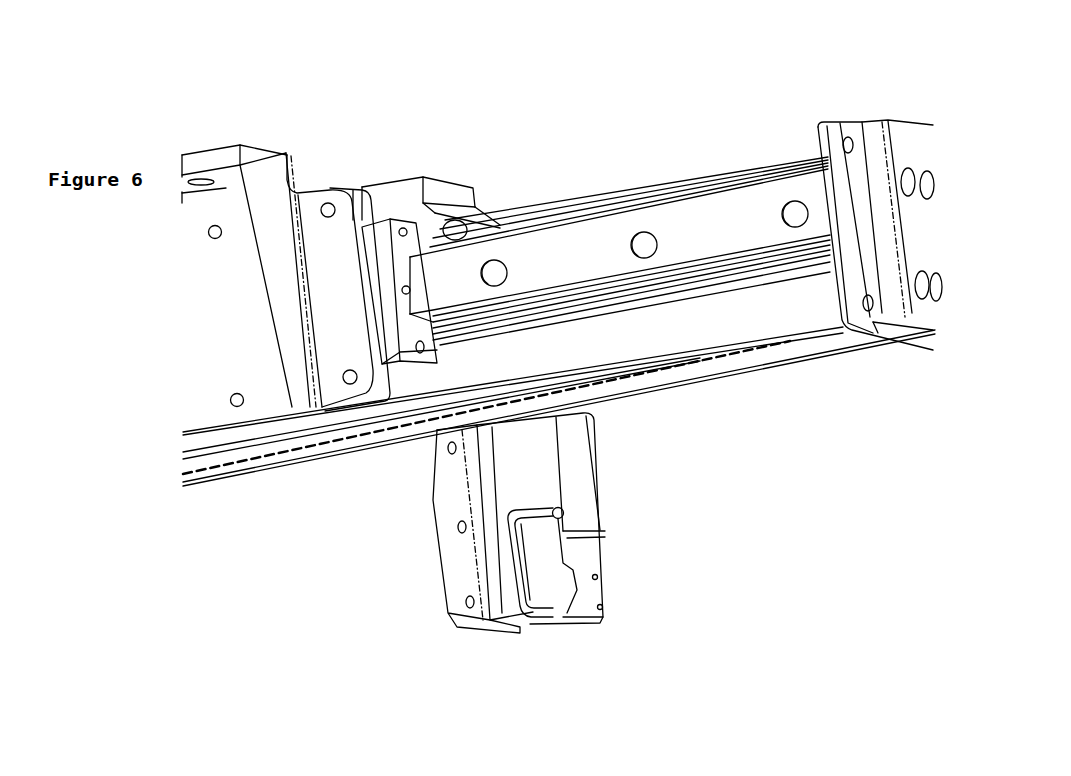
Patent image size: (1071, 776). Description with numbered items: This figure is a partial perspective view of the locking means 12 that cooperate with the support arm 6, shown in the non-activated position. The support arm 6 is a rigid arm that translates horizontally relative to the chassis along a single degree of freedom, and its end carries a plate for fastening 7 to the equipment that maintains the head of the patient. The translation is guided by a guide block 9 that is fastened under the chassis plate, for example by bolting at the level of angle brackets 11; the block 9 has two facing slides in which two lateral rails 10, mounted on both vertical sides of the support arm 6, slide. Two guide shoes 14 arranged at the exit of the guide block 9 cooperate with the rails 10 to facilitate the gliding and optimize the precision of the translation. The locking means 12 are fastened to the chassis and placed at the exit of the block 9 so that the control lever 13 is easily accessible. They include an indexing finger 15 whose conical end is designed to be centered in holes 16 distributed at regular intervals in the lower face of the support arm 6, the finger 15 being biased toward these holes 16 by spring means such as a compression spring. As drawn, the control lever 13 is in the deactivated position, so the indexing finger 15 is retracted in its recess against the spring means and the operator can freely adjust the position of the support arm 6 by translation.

The support arm 6 is at (559, 403).
The plate for fastening 7 is at (887, 106).
The guide block 9 is at (183, 360).
The lateral rails 10 is at (700, 215).
The angle brackets 11 is at (446, 182).
The locking means 12 is at (430, 514).
The control lever 13 is at (544, 583).
The guide shoes 14 is at (384, 312).
The indexing finger 15 is at (559, 402).
The holes 16 is at (636, 395).